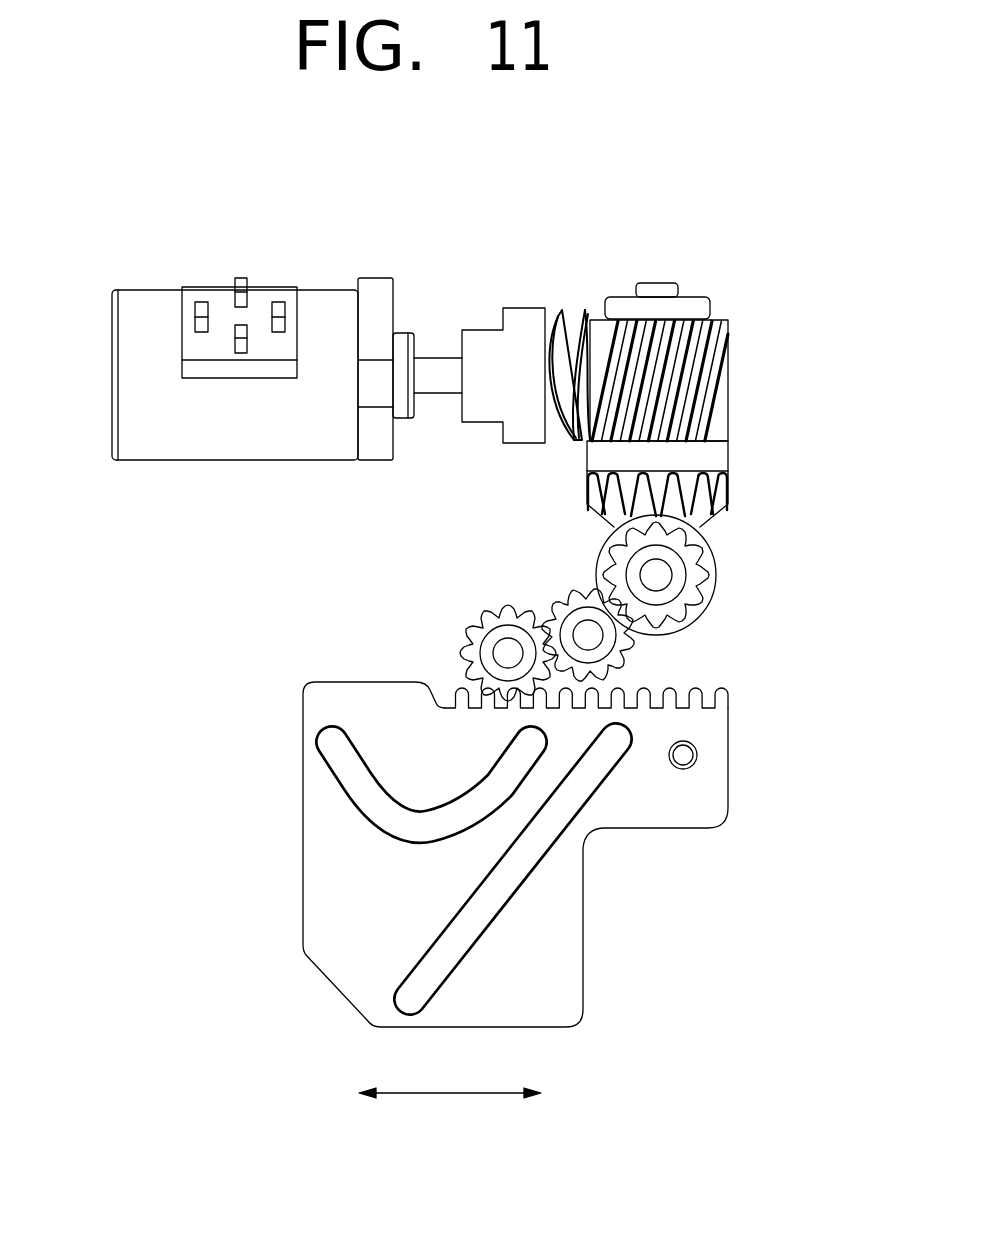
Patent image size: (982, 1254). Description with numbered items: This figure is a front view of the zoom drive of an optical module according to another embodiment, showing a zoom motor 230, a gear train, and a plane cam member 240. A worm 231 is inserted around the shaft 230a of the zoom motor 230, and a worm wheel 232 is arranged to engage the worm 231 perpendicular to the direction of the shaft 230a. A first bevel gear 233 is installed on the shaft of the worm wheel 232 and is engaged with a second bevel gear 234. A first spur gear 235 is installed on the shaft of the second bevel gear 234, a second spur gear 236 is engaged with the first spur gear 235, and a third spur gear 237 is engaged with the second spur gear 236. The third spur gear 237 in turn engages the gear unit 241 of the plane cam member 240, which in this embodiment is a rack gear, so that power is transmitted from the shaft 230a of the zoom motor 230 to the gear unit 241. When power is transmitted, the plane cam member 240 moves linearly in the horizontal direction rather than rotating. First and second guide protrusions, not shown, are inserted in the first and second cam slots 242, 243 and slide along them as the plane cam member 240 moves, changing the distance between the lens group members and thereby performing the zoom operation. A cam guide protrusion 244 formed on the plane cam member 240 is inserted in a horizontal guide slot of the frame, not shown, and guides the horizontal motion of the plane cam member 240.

The zoom motor 230 is at (150, 298).
The shaft 230a is at (437, 365).
The worm 231 is at (557, 310).
The worm wheel 232 is at (718, 388).
The first bevel gear 233 is at (715, 487).
The second bevel gear 234 is at (706, 558).
The first spur gear 235 is at (706, 600).
The second spur gear 236 is at (578, 592).
The third spur gear 237 is at (472, 630).
The plane cam member 240 is at (286, 875).
The gear unit 241 is at (738, 690).
The first cam slot 242 is at (330, 748).
The second cam slot 243 is at (527, 870).
The cam guide protrusion 244 is at (694, 755).